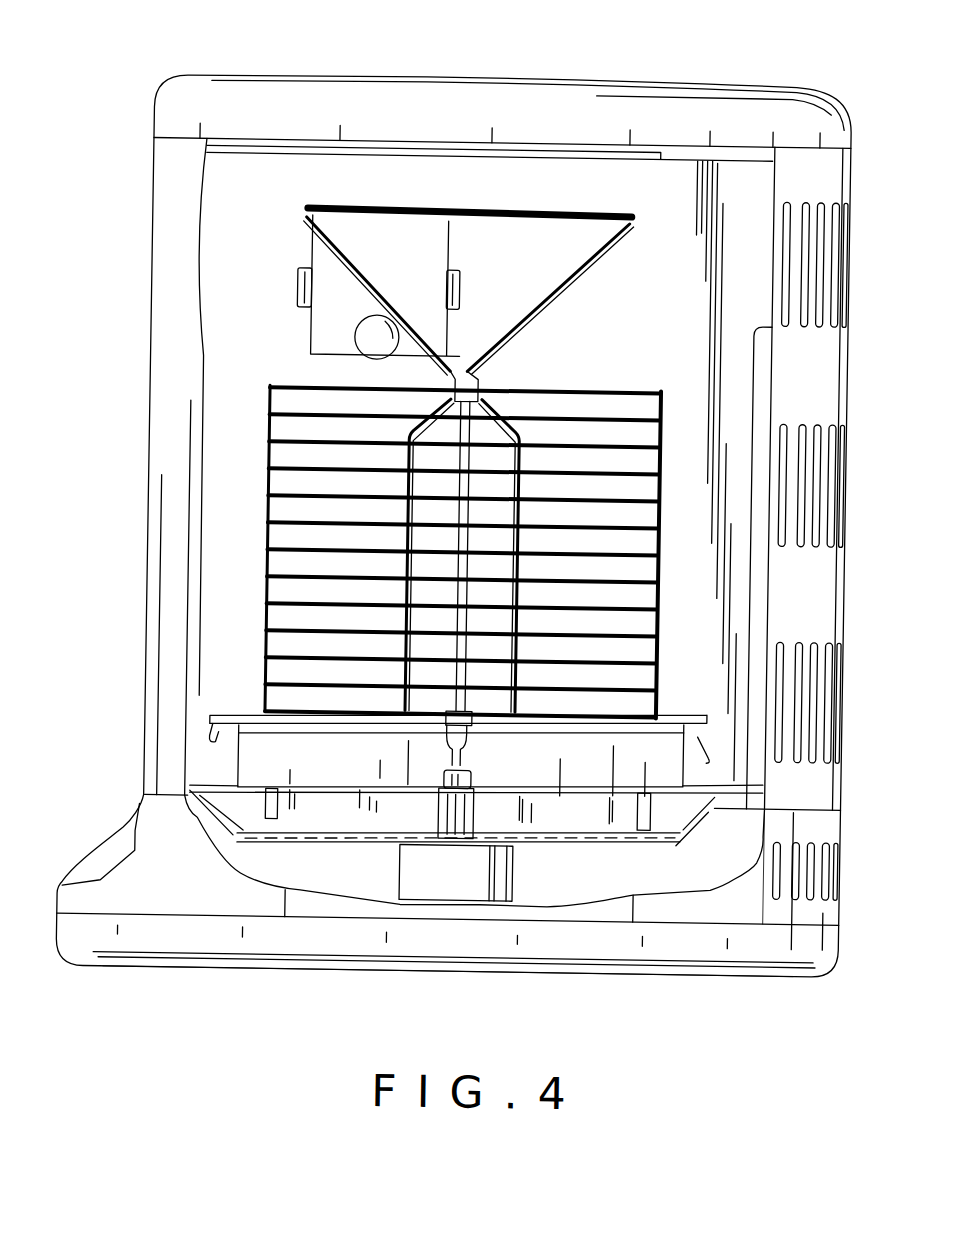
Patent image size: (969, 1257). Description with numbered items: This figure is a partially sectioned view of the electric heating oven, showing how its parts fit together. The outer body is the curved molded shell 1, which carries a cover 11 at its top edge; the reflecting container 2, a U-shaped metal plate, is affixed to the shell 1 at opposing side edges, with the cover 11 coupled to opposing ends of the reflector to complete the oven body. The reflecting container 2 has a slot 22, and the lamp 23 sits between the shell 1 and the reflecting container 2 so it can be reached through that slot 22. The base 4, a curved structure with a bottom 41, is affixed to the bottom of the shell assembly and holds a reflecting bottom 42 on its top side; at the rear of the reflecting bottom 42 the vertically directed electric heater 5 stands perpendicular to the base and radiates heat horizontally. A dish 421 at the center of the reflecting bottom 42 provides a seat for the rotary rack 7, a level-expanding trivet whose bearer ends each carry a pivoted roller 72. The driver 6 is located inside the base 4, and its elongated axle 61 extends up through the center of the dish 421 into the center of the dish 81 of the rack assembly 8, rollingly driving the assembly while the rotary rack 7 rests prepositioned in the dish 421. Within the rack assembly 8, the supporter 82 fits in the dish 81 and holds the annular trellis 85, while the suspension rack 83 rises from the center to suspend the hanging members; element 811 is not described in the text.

The shell 1 is at (808, 395).
The cover 11 is at (573, 99).
The reflecting container 2 is at (730, 291).
The slot 22 is at (324, 270).
The lamp 23 is at (367, 340).
The electric heater 5 is at (757, 653).
The rack assembly 8 is at (80, 784).
The suspension rack 83 is at (427, 356).
The trellis 85 is at (265, 517).
The supporter 82 is at (404, 562).
The dish 81 is at (239, 764).
The shaft coupling 811 is at (444, 772).
The rotary rack 7 is at (376, 815).
The pivoted roller 72 is at (267, 766).
The driver 6 is at (464, 871).
The axle 61 is at (470, 841).
The base 4 is at (186, 892).
The bottom 41 is at (232, 947).
The reflecting bottom 42 is at (721, 797).
The dish 421 is at (665, 815).